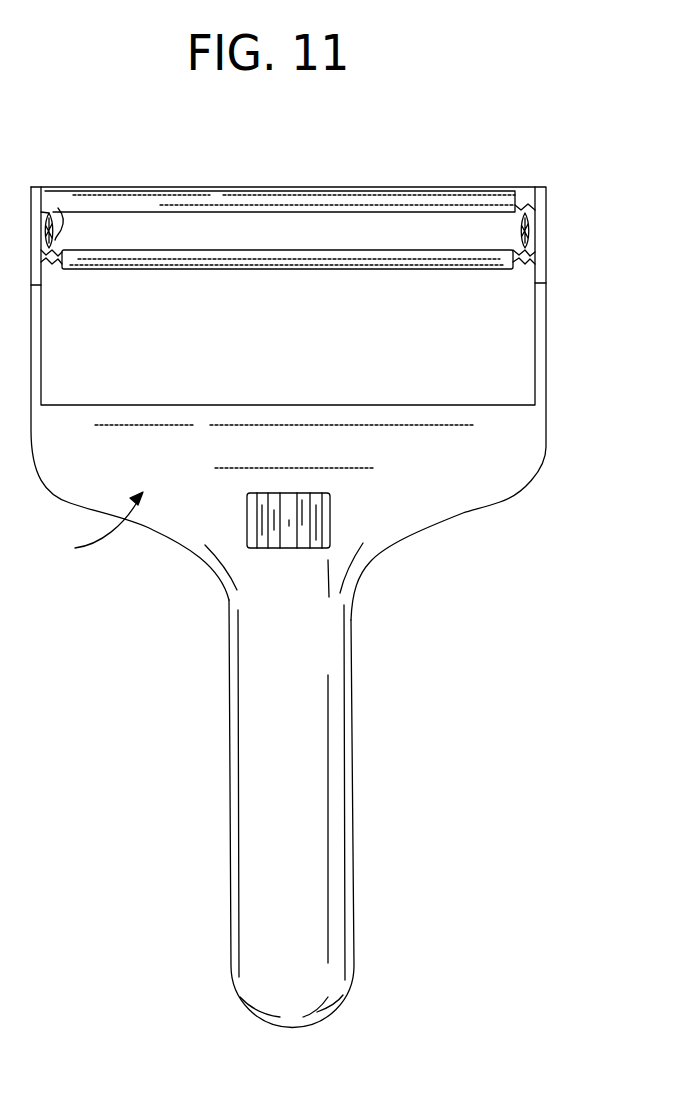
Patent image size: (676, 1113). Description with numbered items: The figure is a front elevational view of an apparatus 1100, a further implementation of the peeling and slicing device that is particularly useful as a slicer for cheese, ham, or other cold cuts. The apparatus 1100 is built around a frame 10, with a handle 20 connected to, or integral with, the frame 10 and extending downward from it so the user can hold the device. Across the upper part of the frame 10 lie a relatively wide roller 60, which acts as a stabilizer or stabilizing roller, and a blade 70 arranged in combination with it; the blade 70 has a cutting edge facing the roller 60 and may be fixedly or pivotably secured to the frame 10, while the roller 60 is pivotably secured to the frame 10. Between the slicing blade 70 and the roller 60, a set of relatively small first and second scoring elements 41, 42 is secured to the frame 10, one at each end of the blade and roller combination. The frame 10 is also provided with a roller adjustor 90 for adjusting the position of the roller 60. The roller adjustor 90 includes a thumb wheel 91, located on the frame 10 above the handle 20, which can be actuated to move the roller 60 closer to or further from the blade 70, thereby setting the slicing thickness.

The apparatus 1100 is at (517, 115).
The frame 10 is at (478, 488).
The handle 20 is at (335, 768).
The first scoring element 41 is at (60, 208).
The second scoring element 42 is at (515, 200).
The roller 60 is at (495, 270).
The blade 70 is at (463, 200).
The roller adjustor 90 is at (93, 531).
The thumb wheel 91 is at (302, 508).